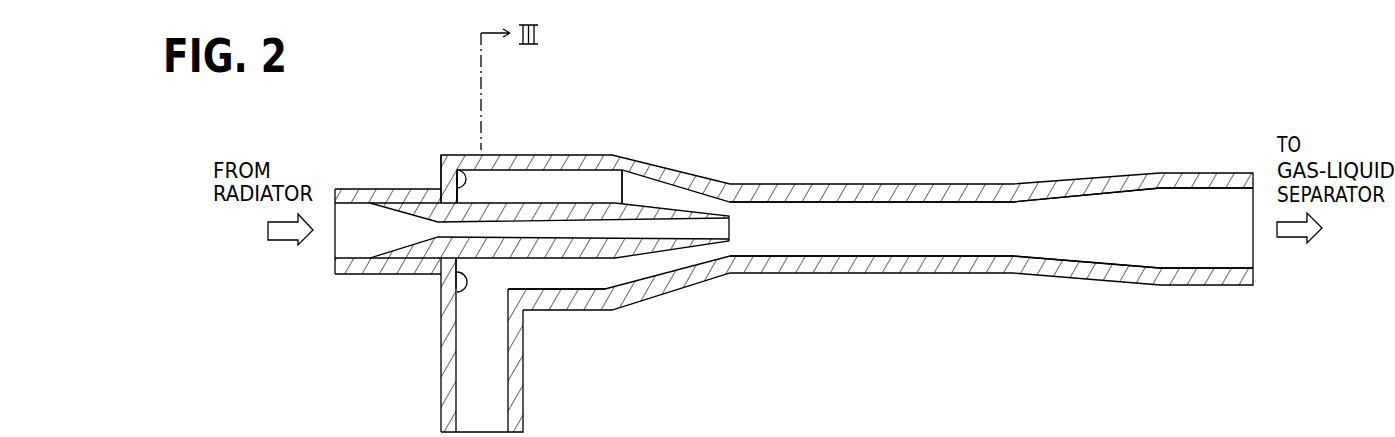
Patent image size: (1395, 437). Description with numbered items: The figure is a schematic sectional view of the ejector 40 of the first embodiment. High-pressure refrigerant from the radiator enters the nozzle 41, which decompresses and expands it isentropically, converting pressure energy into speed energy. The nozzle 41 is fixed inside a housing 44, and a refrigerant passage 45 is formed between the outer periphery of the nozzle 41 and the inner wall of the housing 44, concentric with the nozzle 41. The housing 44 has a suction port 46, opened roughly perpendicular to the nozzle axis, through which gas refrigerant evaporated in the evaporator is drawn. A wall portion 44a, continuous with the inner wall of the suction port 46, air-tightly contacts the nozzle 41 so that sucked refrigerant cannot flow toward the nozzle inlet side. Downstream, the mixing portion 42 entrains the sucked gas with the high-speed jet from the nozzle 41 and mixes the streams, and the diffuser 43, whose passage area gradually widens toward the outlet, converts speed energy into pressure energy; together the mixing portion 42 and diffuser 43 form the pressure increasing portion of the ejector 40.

The ejector 40 is at (818, 184).
The nozzle 41 is at (628, 170).
The mixing portion 42 is at (917, 216).
The diffuser 43 is at (1157, 208).
The housing 44 is at (575, 155).
The wall portion 44a is at (453, 153).
The refrigerant passage 45 is at (518, 183).
The suction port 46 is at (490, 413).